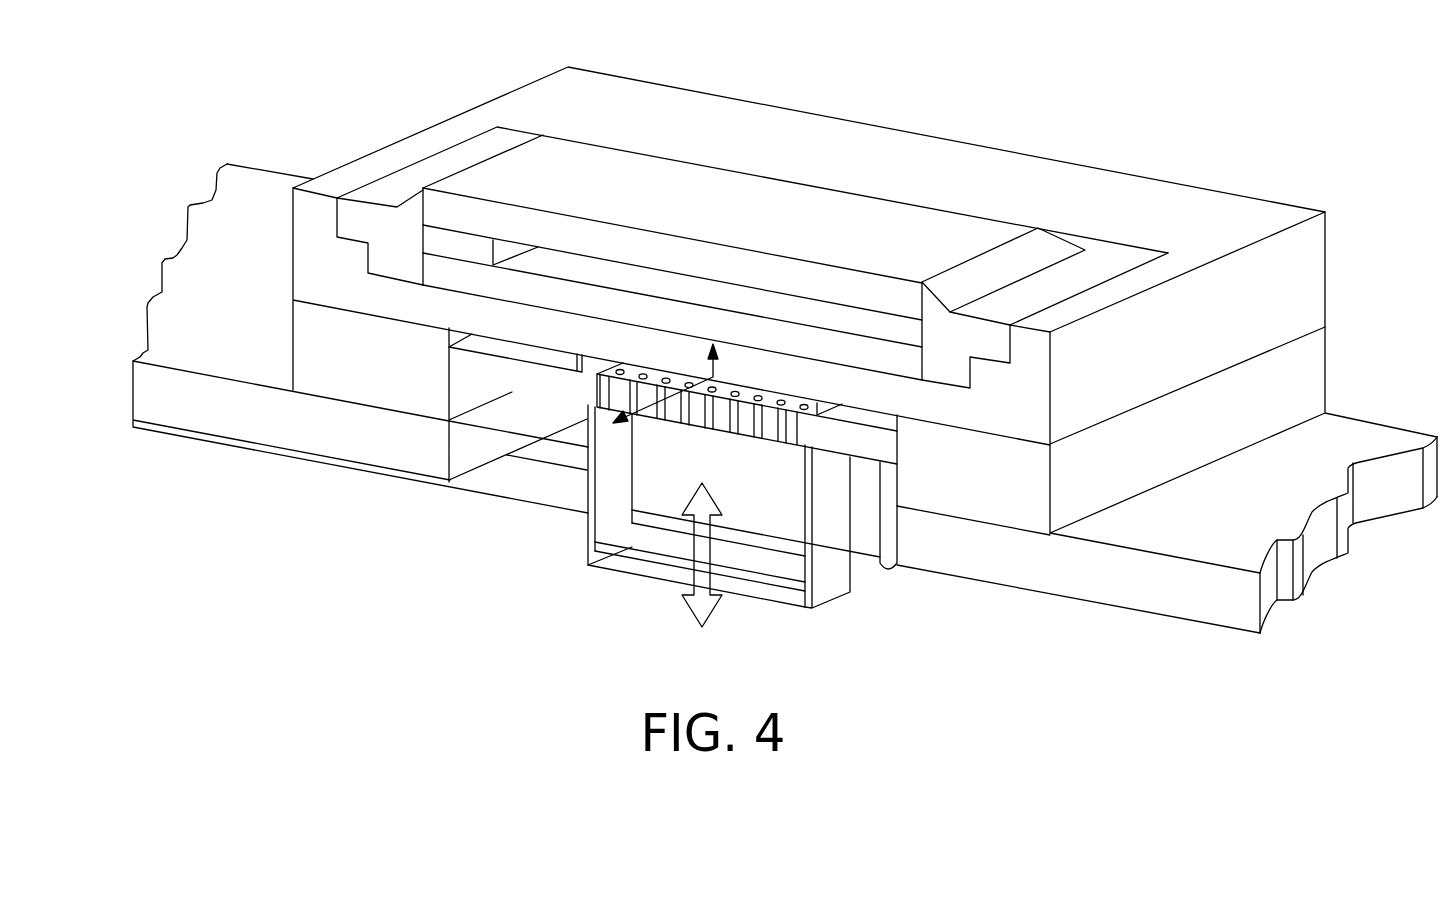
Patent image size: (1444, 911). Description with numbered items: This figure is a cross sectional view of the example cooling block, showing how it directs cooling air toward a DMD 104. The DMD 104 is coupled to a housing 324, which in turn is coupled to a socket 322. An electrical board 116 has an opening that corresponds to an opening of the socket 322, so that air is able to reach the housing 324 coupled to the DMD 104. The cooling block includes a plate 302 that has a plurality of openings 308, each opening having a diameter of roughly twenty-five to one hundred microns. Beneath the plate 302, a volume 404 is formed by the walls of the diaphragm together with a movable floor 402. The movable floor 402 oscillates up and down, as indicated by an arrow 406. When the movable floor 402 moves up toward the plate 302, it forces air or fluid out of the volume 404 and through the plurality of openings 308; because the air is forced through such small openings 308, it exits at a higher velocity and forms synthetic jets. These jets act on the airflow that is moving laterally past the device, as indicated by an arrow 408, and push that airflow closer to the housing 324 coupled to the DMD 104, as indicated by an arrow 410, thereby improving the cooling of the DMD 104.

The DMD 104 is at (685, 283).
The electrical board 116 is at (203, 346).
The plate 302 is at (483, 378).
The plurality of openings 308 is at (758, 392).
The socket 322 is at (1127, 467).
The housing 324 is at (1293, 309).
The movable floor 402 is at (634, 558).
The volume 404 is at (663, 483).
The arrow 406 is at (718, 602).
The arrow 408 is at (663, 412).
The arrow 410 is at (730, 368).